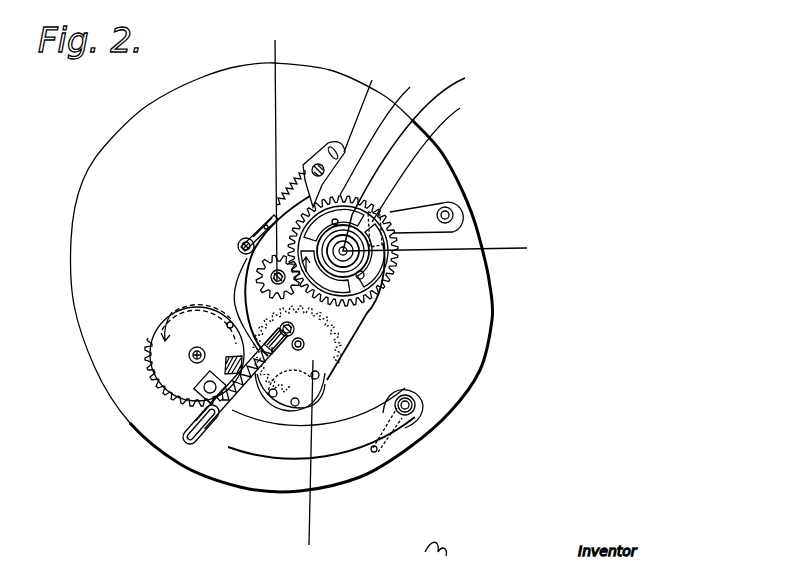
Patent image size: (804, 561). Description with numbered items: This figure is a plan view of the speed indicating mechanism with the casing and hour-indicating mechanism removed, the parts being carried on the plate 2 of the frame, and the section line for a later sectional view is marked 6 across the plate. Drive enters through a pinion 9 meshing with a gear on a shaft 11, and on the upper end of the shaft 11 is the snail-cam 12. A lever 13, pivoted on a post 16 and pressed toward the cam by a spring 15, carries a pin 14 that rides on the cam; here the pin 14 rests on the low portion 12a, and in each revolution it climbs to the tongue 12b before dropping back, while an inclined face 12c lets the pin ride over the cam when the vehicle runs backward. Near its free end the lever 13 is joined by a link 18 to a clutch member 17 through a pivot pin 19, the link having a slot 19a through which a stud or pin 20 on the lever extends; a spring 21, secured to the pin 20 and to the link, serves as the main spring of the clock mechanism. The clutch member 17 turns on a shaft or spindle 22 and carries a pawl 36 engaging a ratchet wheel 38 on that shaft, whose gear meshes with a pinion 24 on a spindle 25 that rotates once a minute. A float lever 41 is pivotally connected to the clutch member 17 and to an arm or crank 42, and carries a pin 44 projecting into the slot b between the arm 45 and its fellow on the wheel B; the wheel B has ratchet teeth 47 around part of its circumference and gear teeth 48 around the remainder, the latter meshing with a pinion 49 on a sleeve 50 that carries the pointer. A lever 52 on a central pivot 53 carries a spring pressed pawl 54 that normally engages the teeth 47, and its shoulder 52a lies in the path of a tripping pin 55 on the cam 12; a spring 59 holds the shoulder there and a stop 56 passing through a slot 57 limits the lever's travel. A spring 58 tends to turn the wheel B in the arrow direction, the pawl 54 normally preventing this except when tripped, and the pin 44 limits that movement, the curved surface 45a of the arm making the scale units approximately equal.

The plate 2 is at (467, 312).
The star wheel 6 is at (291, 289).
The wheel B is at (444, 161).
The arm 45 is at (375, 216).
The lever 13 is at (460, 215).
The spring pressed pawl 54 is at (307, 166).
The stop 56 is at (369, 105).
The slot 57 is at (388, 132).
The spring 58 is at (430, 157).
The ratchet teeth 47 is at (403, 220).
The arm or crank 42 is at (420, 215).
The spring 59 is at (268, 240).
The lever 52 is at (268, 208).
The sleeve 50 is at (240, 240).
The central pivot 53 is at (240, 238).
The staff or spindle 25 is at (232, 253).
The pinion 49 is at (267, 272).
The pinion 24 is at (258, 288).
The snail-cam 12 is at (180, 313).
The low portion 12a is at (193, 393).
The shaft 11 is at (192, 353).
The tripping pin 55 is at (227, 324).
The shoulder 52a is at (240, 340).
The inclined face 12c is at (226, 366).
The pin 14 is at (193, 407).
The spring 21 is at (238, 418).
The stud or pin 20 is at (192, 435).
The pinion 9 is at (228, 421).
The tongue 12b is at (243, 410).
The link 18 is at (277, 405).
The slot 19a is at (230, 400).
The pivot pin 19 is at (293, 329).
The shaft or spindle 22 is at (298, 350).
The clutch member 17 is at (316, 392).
The pawl 36 is at (302, 413).
The post 16 is at (412, 412).
The spring 15 is at (382, 442).
The float lever 41 is at (360, 322).
The ratchet wheel 38 is at (363, 332).
The pin 44 is at (377, 275).
The curved surface 45a is at (395, 258).
The slot b is at (387, 268).
The gear teeth 48 is at (340, 290).